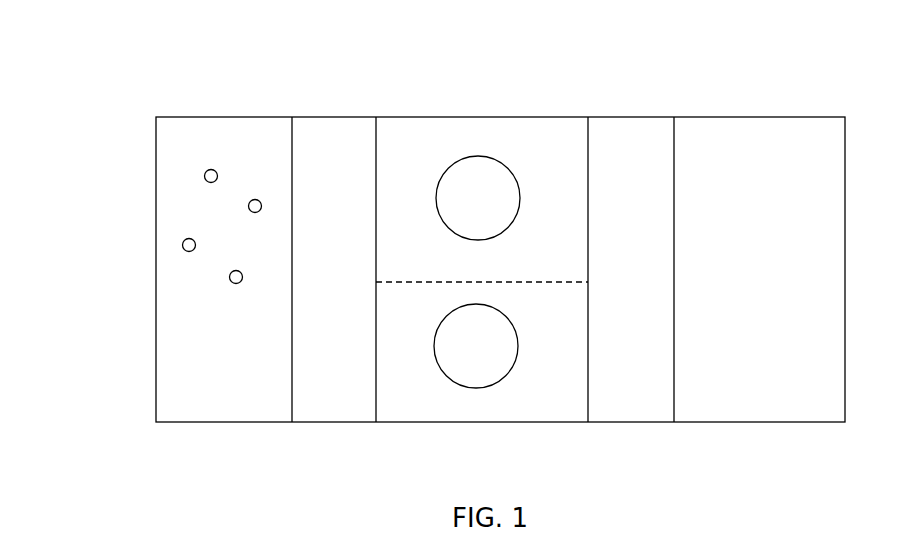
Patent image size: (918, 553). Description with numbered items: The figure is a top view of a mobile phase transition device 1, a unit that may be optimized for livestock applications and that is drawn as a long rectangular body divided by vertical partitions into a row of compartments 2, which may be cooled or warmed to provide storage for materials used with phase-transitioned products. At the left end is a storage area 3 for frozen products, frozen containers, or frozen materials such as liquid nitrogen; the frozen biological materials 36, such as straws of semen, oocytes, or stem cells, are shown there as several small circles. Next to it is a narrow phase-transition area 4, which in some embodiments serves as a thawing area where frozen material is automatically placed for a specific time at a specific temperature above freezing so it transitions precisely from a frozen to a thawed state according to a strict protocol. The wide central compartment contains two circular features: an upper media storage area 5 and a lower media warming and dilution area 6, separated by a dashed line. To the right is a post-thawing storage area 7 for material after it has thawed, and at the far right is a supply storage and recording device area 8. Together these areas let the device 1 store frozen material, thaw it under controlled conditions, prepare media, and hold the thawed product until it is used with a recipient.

The mobile phase transition device 1 is at (733, 439).
The compartments 2 is at (221, 380).
The storage area 3 is at (240, 146).
The phase-transition area 4 is at (334, 162).
The media storage area 5 is at (487, 193).
The media warming and dilution area 6 is at (468, 349).
The post-thawing storage area 7 is at (628, 170).
The supply storage and recording device area 8 is at (757, 208).
The frozen biological materials 36 is at (207, 175).